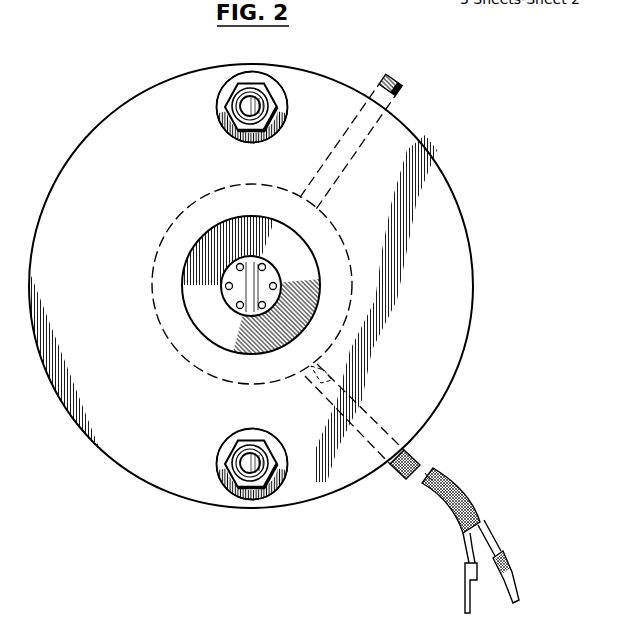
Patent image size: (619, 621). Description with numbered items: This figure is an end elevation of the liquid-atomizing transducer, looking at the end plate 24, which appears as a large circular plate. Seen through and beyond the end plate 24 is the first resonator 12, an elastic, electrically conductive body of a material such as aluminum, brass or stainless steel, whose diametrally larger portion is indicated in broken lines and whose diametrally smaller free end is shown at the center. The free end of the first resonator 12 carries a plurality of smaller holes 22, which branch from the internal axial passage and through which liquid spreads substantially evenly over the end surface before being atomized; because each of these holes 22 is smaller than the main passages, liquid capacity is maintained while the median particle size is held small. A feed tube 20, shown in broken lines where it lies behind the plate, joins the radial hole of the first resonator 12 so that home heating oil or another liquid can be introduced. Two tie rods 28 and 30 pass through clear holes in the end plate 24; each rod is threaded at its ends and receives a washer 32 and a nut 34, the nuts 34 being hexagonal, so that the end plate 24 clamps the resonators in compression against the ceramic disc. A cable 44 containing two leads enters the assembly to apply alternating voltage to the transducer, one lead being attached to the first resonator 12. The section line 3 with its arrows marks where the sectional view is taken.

The section line 3- 3 is at (397, 70).
The first resonator 12 is at (233, 318).
The feed tube 20 is at (393, 93).
The smaller holes 22 is at (274, 283).
The end plate 24 is at (478, 228).
The tie rod 28 is at (265, 107).
The tie rod 30 is at (262, 450).
The washer 32 is at (223, 101).
The nut 34 is at (232, 118).
The cable 44 is at (463, 488).